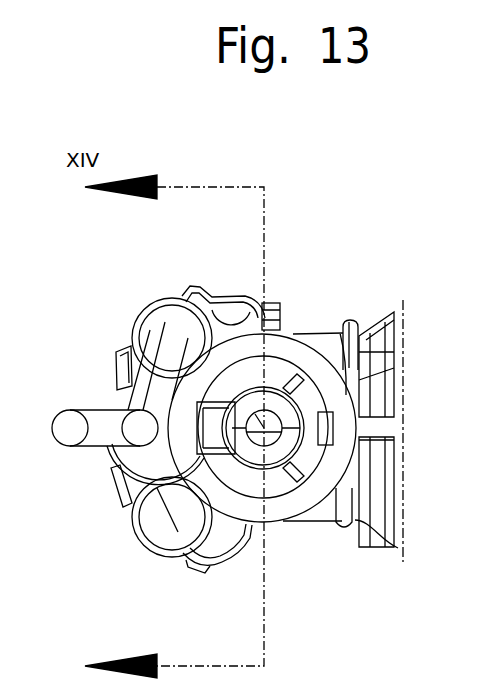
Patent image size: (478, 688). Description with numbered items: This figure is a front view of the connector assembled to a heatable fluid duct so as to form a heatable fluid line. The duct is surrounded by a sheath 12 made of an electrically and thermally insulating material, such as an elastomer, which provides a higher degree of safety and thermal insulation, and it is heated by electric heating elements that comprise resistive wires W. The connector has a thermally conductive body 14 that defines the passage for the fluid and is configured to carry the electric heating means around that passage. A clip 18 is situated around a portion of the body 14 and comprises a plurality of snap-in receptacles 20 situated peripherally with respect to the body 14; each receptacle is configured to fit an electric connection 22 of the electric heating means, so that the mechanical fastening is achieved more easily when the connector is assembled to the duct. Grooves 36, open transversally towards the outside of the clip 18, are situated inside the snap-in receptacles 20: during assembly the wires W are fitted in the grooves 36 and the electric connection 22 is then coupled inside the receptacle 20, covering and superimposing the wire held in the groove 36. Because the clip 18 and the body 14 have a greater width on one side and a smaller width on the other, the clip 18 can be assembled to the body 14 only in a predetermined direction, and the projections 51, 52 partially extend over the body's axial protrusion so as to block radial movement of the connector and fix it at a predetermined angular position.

The sheath 12 is at (290, 350).
The thermally conductive body 14 is at (377, 522).
The clip 18 is at (108, 355).
The snap-in receptacles 20 is at (195, 307).
The electric connection 22 is at (148, 309).
The grooves 36 is at (243, 317).
The projection 51 is at (313, 448).
The projection 52 is at (208, 430).
The resistive wires w is at (340, 528).